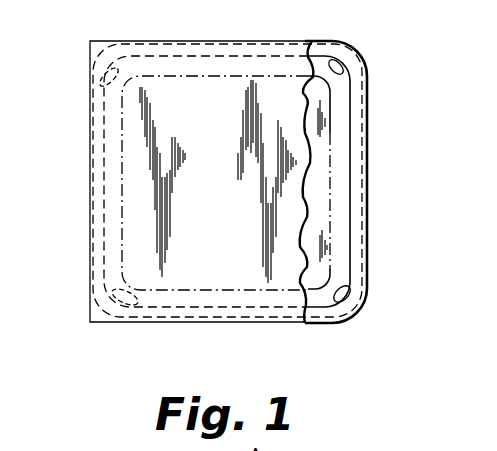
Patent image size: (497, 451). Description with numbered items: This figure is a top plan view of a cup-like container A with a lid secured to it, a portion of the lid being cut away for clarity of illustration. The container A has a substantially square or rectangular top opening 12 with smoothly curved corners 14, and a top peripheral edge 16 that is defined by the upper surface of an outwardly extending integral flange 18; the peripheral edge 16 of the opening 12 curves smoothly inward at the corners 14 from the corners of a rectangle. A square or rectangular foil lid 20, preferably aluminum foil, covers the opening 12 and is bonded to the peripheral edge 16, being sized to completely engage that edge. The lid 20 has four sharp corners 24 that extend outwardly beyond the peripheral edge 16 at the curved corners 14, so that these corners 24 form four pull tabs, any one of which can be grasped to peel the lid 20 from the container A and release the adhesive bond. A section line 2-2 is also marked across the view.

The top opening 12 is at (343, 99).
The corners 14 is at (94, 86).
The top peripheral edge 16 is at (353, 136).
The outwardly extending integral flange 18 is at (368, 220).
The foil lid 20 is at (202, 93).
The sharp corners 24 is at (101, 43).
The container A is at (379, 181).
The section line 2- 2 is at (88, 363).